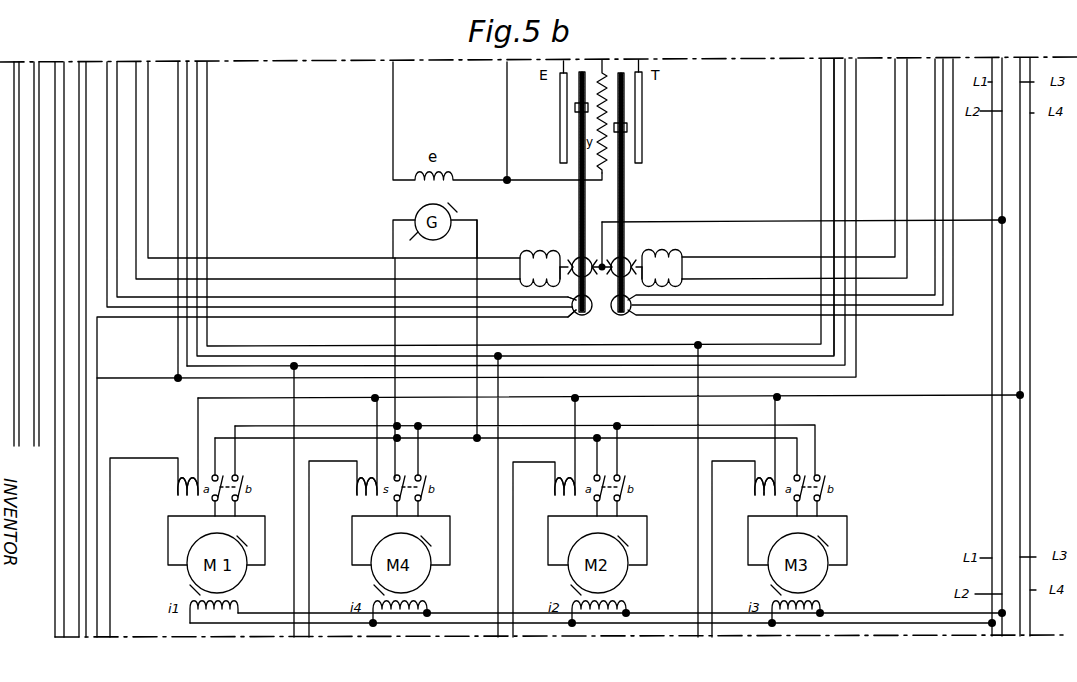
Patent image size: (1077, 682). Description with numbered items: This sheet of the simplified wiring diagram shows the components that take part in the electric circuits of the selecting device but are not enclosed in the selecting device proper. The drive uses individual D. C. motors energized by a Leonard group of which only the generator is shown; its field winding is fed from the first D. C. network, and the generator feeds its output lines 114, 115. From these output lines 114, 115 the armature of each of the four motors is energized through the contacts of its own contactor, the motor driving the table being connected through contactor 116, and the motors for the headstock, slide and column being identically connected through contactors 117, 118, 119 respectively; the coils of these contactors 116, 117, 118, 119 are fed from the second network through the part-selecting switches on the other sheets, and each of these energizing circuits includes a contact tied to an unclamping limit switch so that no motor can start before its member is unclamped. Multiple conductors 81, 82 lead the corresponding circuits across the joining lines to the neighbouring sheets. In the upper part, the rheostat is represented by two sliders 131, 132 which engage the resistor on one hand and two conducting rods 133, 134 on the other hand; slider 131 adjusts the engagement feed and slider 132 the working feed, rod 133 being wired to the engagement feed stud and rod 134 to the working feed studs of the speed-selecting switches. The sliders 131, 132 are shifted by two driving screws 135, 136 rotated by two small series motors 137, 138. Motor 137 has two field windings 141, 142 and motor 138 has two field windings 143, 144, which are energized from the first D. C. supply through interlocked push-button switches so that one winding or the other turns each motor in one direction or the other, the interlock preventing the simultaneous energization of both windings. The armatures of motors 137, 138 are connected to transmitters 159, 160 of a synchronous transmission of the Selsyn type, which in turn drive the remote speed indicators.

The conductor 81 is at (185, 96).
The conductor 82 is at (832, 87).
The output line of generator G 114 is at (393, 334).
The output line of generator G 115 is at (478, 340).
The contactor 116 is at (169, 486).
The contactor 117 is at (551, 488).
The contactor 118 is at (750, 486).
The contactor 119 is at (351, 488).
The slider 131 is at (568, 108).
The slider 132 is at (634, 130).
The conducting rod 133 is at (565, 148).
The conducting rod 134 is at (641, 153).
The driving screw 135 is at (578, 166).
The driving screw 136 is at (624, 172).
The series motor 137 is at (575, 258).
The series motor 138 is at (630, 258).
The field winding 141 is at (538, 252).
The field winding 142 is at (520, 274).
The field winding 143 is at (673, 254).
The field winding 144 is at (683, 273).
The transmitter 159 is at (582, 315).
The transmitter 160 is at (628, 315).